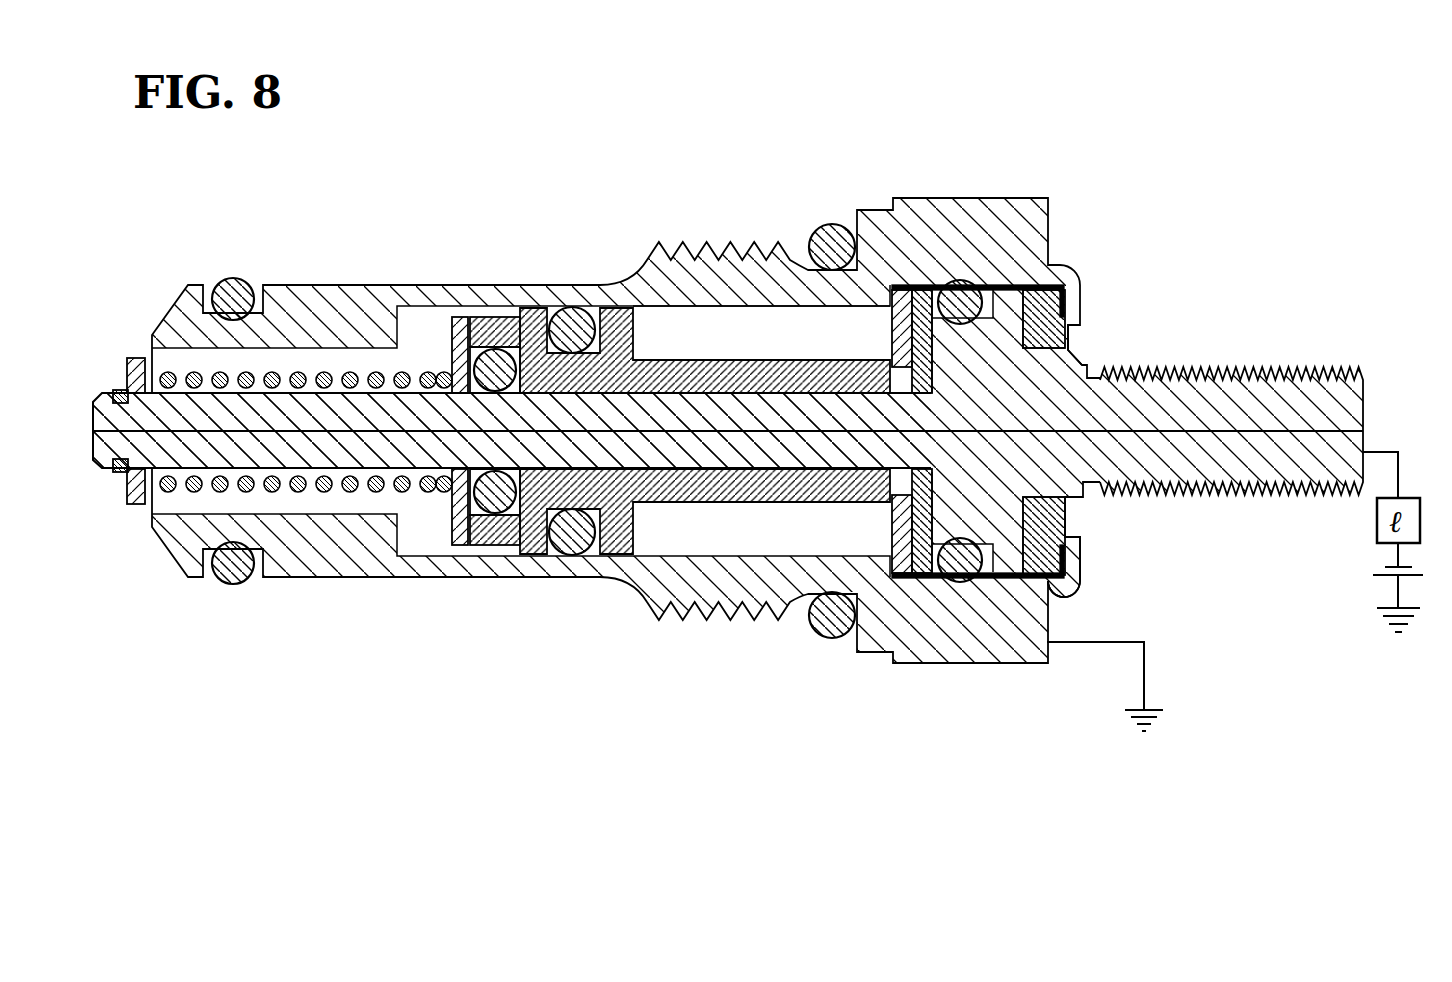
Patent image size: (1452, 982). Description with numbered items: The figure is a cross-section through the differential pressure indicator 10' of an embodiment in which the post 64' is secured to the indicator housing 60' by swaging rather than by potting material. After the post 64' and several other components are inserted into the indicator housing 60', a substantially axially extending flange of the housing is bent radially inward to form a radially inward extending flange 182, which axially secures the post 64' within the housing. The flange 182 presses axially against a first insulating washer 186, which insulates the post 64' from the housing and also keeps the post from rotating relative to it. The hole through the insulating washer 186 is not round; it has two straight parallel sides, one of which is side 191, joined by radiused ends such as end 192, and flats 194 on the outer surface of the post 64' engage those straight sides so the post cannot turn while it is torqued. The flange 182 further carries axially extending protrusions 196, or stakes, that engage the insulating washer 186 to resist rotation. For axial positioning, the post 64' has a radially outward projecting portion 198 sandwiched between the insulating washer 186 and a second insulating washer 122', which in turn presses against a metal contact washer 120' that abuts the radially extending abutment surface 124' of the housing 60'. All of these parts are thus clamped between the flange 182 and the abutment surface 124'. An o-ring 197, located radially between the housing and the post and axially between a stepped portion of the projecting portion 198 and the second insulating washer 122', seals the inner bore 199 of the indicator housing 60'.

The differential pressure indicator 10' is at (376, 171).
The indicator housing 60' is at (626, 469).
The post 64' is at (728, 540).
The metal contact washer 120' is at (862, 514).
The second insulating washer 122' is at (936, 510).
The radially extending abutment surface 124' is at (943, 355).
The radially inward extending flange 182 is at (1076, 588).
The first insulating washer 186 is at (1067, 600).
The straight parallel side 191 is at (1097, 455).
The radiused end 192 is at (1082, 365).
The flats 194 is at (1083, 512).
The axially extending protrusions 196 is at (1067, 305).
The o-ring 197 is at (970, 292).
The radially outward projecting portion 198 is at (983, 360).
The inner bore 199 is at (790, 338).